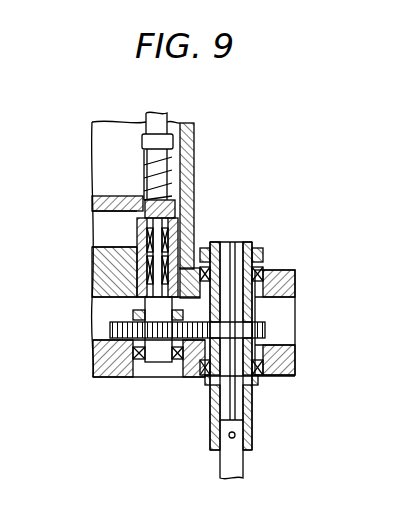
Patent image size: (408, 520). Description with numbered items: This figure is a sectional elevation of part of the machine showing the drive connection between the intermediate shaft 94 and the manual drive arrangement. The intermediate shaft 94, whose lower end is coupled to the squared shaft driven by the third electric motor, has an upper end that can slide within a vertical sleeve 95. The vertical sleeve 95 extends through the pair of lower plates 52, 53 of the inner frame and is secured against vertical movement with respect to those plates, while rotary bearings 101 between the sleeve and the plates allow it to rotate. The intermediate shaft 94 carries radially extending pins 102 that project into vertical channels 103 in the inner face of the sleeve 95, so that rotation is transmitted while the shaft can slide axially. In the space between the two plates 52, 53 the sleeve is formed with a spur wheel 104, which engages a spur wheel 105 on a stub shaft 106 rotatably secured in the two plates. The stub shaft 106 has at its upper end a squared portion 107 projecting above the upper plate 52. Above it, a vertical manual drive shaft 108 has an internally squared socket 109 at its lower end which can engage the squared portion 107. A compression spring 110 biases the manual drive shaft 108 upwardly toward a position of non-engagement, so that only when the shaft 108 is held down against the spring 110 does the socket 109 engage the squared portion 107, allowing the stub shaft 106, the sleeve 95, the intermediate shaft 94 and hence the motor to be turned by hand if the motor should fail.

The lower plate 52 is at (259, 272).
The lower plate 53 is at (293, 375).
The intermediate shaft 94 is at (244, 462).
The vertical sleeve 95 is at (254, 401).
The rotary bearings 101 is at (297, 274).
The radially extending pins 102 is at (229, 437).
The vertical channels 103 is at (210, 399).
The spur wheel 104 is at (265, 327).
The spur wheel 105 is at (112, 336).
The stub shaft 106 is at (155, 307).
The squared portion 107 is at (140, 270).
The vertical manual drive shaft 108 is at (160, 122).
The internally squared socket 109 is at (148, 233).
The compression spring 110 is at (142, 180).